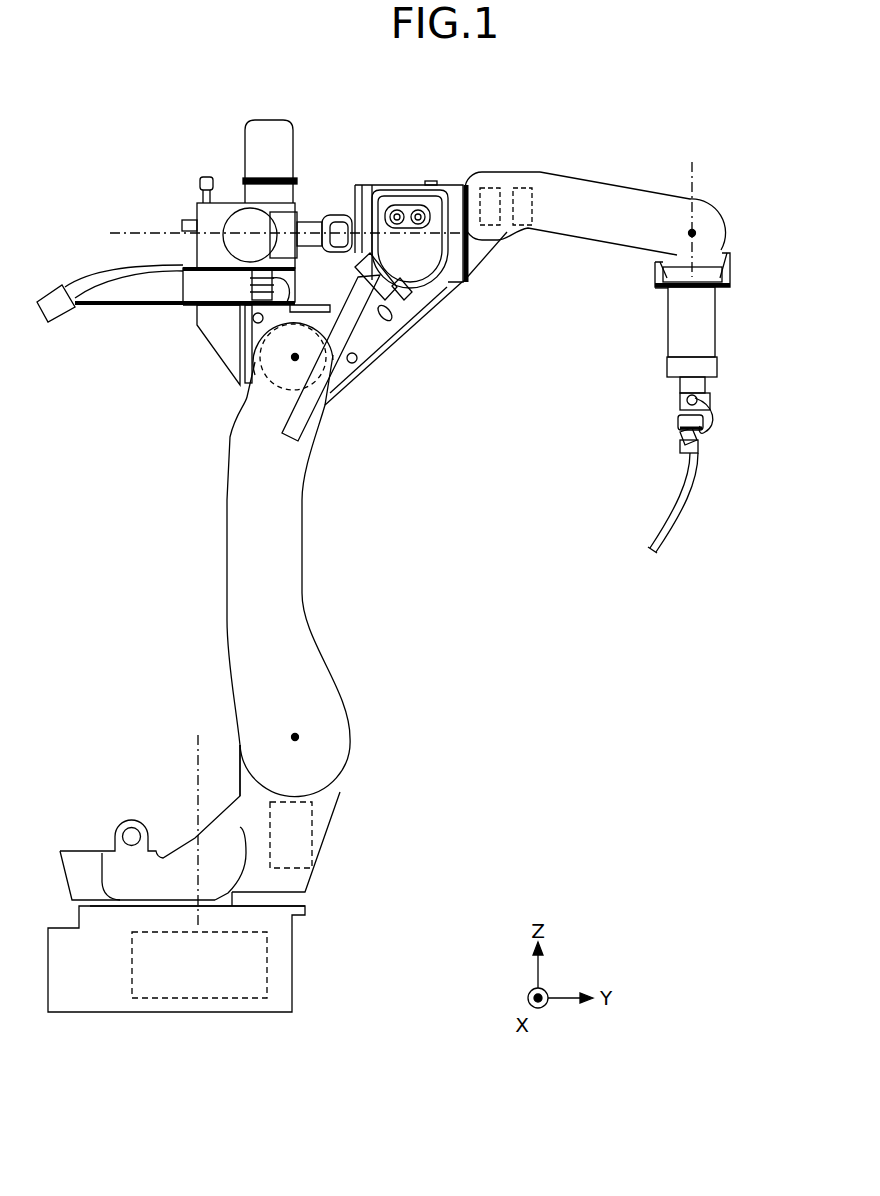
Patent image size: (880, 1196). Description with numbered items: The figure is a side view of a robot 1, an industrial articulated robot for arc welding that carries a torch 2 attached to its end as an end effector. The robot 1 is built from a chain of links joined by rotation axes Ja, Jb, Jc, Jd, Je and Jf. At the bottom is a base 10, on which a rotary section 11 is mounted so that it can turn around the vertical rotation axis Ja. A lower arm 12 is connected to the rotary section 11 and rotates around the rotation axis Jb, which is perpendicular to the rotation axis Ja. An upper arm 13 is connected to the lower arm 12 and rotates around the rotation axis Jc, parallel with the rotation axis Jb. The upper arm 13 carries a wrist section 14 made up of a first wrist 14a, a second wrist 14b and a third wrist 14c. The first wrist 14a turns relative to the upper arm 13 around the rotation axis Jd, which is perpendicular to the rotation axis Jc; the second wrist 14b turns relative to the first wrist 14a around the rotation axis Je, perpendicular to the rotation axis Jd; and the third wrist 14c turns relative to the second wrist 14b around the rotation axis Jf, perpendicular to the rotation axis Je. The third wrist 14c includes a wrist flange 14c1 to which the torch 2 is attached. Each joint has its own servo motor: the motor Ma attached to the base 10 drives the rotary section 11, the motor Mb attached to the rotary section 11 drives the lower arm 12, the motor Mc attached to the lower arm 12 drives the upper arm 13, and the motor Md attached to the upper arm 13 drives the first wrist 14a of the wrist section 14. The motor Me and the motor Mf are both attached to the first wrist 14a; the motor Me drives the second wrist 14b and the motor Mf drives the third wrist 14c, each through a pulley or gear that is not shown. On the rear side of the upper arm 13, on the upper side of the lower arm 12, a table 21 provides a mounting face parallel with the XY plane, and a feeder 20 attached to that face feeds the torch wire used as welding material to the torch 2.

The robot 1 is at (413, 117).
The torch 2 is at (677, 343).
The base 10 is at (289, 997).
The rotary section 11 is at (304, 887).
The lower arm 12 is at (310, 662).
The upper arm 13 is at (382, 187).
The wrist section 14 is at (653, 263).
The first wrist 14a is at (606, 184).
The second wrist 14b is at (718, 273).
The third wrist 14c is at (724, 294).
The wrist flange 14c1 is at (658, 289).
The feeder 20 is at (225, 194).
The table 21 is at (210, 306).
The rotation axis Ja is at (196, 777).
The rotation axis Jb is at (300, 737).
The rotation axis Jc is at (294, 360).
The rotation axis Jd is at (138, 232).
The rotation axis Je is at (696, 231).
The rotation axis Jf is at (695, 168).
The motor Ma is at (268, 950).
The motor Mb is at (313, 818).
The motor Mc is at (258, 364).
The motor Md is at (336, 215).
The motor Me is at (523, 187).
The motor Mf is at (488, 187).